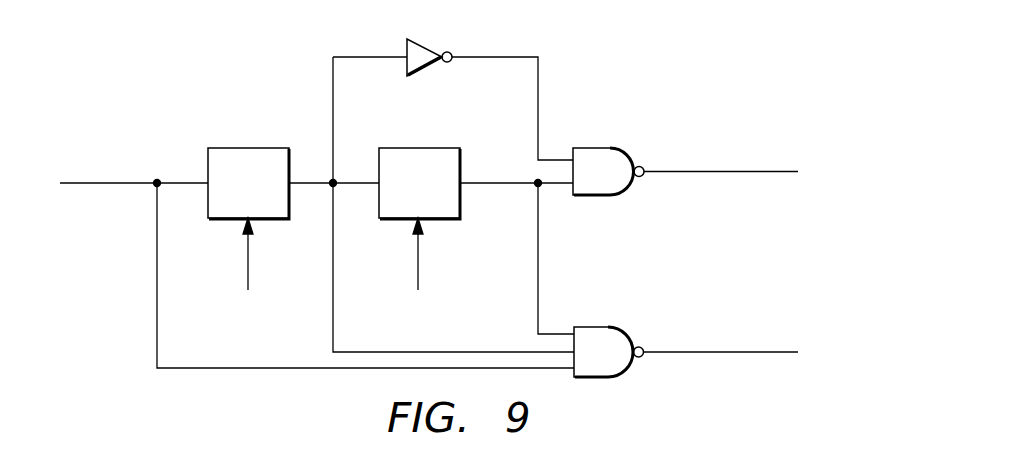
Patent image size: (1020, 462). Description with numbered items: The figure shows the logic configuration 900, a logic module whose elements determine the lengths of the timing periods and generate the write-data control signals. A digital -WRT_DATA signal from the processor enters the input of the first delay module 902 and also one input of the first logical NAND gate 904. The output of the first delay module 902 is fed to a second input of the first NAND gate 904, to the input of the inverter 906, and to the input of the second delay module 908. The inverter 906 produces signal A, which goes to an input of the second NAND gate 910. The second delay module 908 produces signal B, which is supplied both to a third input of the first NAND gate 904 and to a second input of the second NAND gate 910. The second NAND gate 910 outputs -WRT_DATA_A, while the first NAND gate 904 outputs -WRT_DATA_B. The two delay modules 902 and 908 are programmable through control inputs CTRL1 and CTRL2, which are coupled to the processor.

The logic configuration 900 is at (203, 52).
The first delay module 902 is at (250, 147).
The first logical NAND gate 904 is at (596, 327).
The inverter 906 is at (430, 47).
The second delay module 908 is at (440, 220).
The second logical NAND gate 910 is at (595, 148).